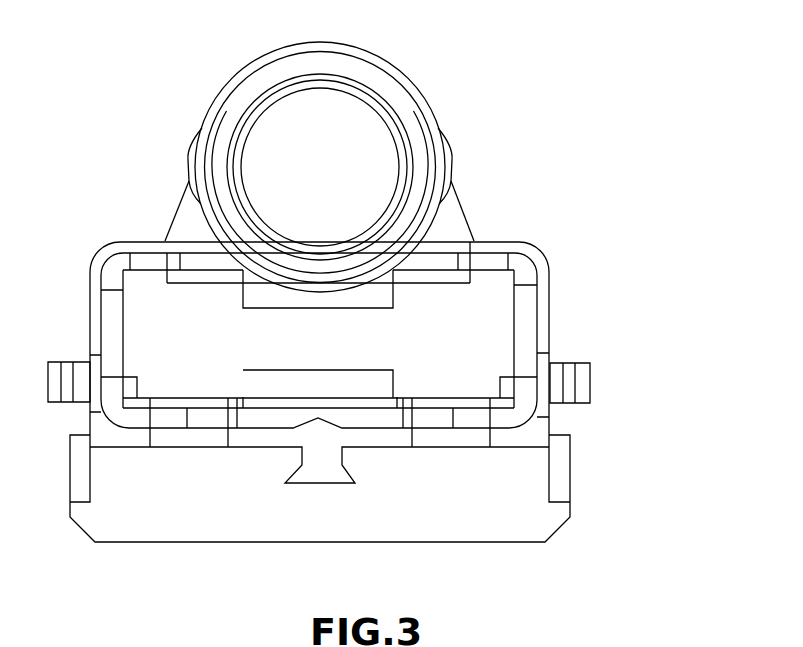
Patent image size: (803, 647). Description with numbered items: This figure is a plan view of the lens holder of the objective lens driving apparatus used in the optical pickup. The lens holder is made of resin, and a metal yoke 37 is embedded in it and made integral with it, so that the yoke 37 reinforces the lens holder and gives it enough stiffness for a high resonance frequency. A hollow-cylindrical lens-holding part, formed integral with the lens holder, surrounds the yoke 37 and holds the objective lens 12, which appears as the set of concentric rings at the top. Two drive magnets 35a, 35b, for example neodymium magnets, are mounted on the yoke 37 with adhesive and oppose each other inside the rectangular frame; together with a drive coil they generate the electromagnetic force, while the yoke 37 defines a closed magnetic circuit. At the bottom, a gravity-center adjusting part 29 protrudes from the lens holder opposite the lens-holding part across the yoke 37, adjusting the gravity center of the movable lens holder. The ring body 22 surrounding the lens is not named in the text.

The objective lens 12 is at (345, 138).
The lens housing ring 22 is at (449, 218).
The drive magnet 35b is at (390, 292).
The drive magnet 35a is at (385, 387).
The yoke 37 is at (528, 333).
The gravity-center adjusting part 29 is at (512, 490).